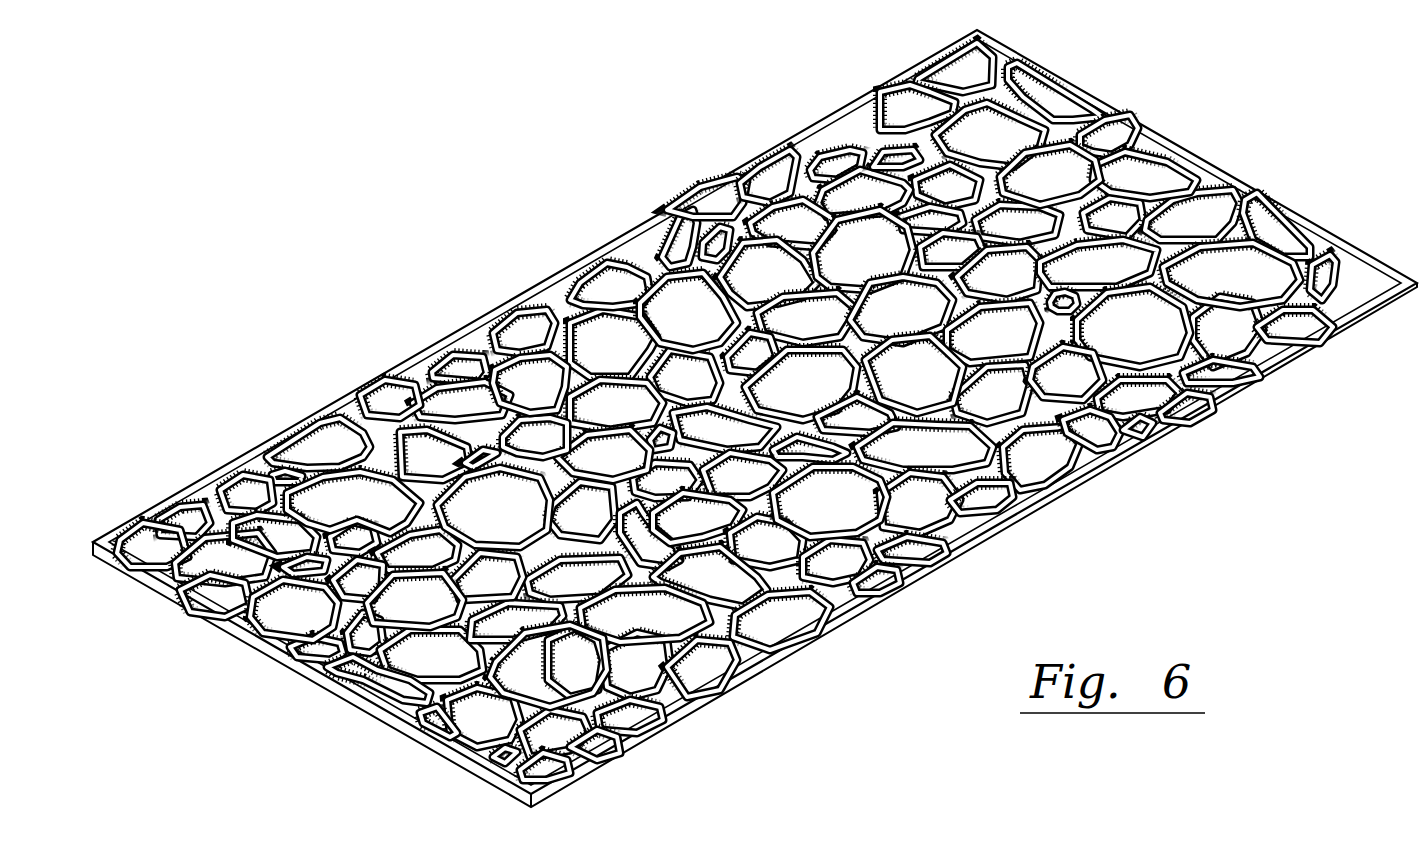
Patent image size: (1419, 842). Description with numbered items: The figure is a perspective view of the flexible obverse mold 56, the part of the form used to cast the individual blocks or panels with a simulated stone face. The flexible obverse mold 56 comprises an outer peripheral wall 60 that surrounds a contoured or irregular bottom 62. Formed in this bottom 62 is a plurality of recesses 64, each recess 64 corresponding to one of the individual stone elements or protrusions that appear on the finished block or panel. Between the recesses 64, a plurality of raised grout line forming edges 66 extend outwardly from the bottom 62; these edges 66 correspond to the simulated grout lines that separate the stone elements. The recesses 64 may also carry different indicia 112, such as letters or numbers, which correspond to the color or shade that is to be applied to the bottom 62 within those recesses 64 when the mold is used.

The flexible obverse mold 56 is at (755, 418).
The outer peripheral wall 60 is at (1046, 74).
The contoured or irregular bottom 62 is at (577, 288).
The recess 64 is at (515, 385).
The raised grout line forming edge 66 is at (1085, 228).
The indicia 112 is at (1071, 186).